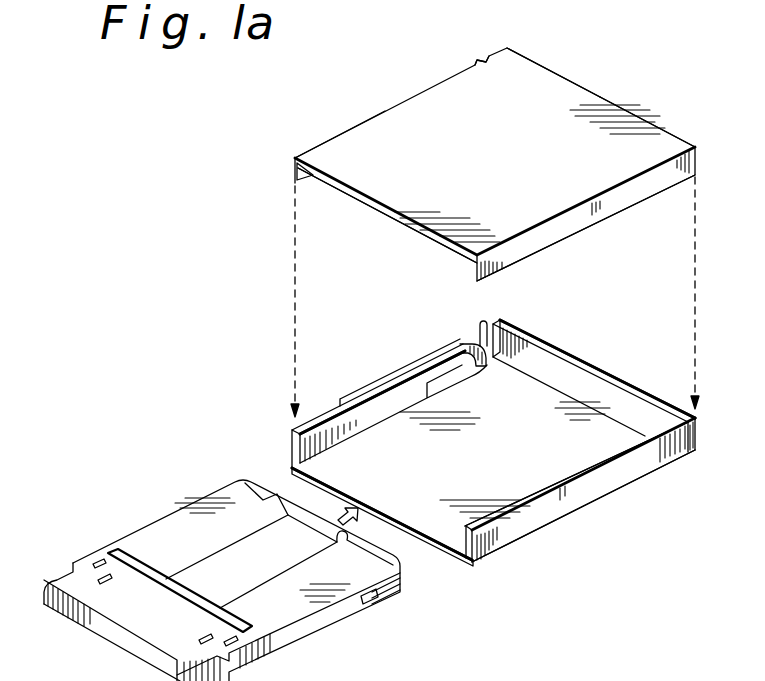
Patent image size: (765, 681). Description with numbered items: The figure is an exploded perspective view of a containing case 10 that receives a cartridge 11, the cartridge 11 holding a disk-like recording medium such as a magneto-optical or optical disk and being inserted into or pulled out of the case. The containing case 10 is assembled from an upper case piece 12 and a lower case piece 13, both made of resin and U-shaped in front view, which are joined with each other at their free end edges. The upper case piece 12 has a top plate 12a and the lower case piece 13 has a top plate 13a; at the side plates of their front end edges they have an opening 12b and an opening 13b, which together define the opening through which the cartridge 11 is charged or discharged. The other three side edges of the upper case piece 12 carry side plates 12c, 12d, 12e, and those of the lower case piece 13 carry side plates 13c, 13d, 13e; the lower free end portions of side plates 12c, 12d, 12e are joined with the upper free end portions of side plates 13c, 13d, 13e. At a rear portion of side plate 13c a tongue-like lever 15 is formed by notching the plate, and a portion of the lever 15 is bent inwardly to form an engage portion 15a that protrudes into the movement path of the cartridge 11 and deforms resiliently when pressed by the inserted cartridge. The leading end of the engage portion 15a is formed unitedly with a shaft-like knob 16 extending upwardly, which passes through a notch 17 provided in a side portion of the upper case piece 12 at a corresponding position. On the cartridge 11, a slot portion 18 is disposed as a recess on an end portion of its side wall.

The containing case 10 is at (260, 230).
The cartridge 11 is at (168, 520).
The upper case piece 12 is at (421, 110).
The top plate 12a is at (550, 95).
The opening 12b is at (364, 205).
The side plate 12c is at (348, 128).
The side plate 12d is at (606, 212).
The side plate 12e is at (640, 113).
The lower case piece 13 is at (523, 392).
The top plate 13a is at (567, 433).
The opening 13b is at (300, 455).
The side plate 13c is at (364, 412).
The side plate 13d is at (609, 487).
The side plate 13e is at (626, 395).
The lever 15 is at (440, 362).
The engage portion 15a is at (470, 349).
The knob 16 is at (487, 330).
The notch 17 is at (480, 62).
The slot portion 18 is at (376, 604).